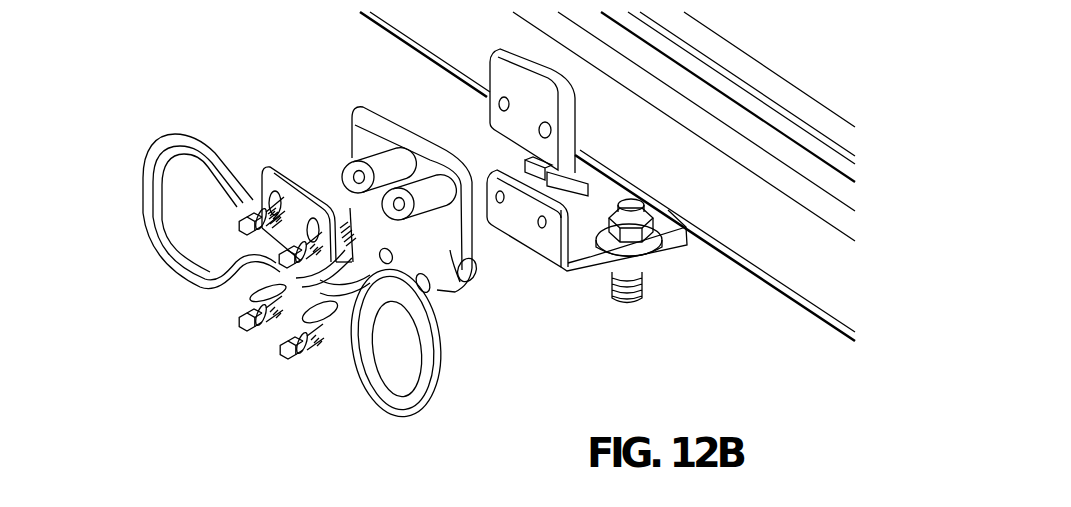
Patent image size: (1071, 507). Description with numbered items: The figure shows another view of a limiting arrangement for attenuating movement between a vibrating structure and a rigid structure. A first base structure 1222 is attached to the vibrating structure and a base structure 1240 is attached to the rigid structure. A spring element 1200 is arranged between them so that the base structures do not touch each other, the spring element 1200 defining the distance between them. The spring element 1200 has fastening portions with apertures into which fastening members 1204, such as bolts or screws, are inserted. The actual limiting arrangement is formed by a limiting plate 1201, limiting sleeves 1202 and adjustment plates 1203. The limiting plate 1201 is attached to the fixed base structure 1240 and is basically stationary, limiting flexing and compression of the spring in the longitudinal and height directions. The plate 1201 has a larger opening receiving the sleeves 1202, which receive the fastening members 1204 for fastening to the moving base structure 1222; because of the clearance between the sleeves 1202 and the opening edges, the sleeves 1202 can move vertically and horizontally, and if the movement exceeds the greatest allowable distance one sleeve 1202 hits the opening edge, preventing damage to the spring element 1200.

The spring element 1200 is at (293, 205).
The limiting plate 1201 is at (372, 105).
The limiting sleeves 1202 is at (375, 158).
The adjustment plates 1203 is at (472, 273).
The fastening members 1204 is at (283, 358).
The first base structure 1222 is at (568, 107).
The base structure 1240 is at (572, 263).